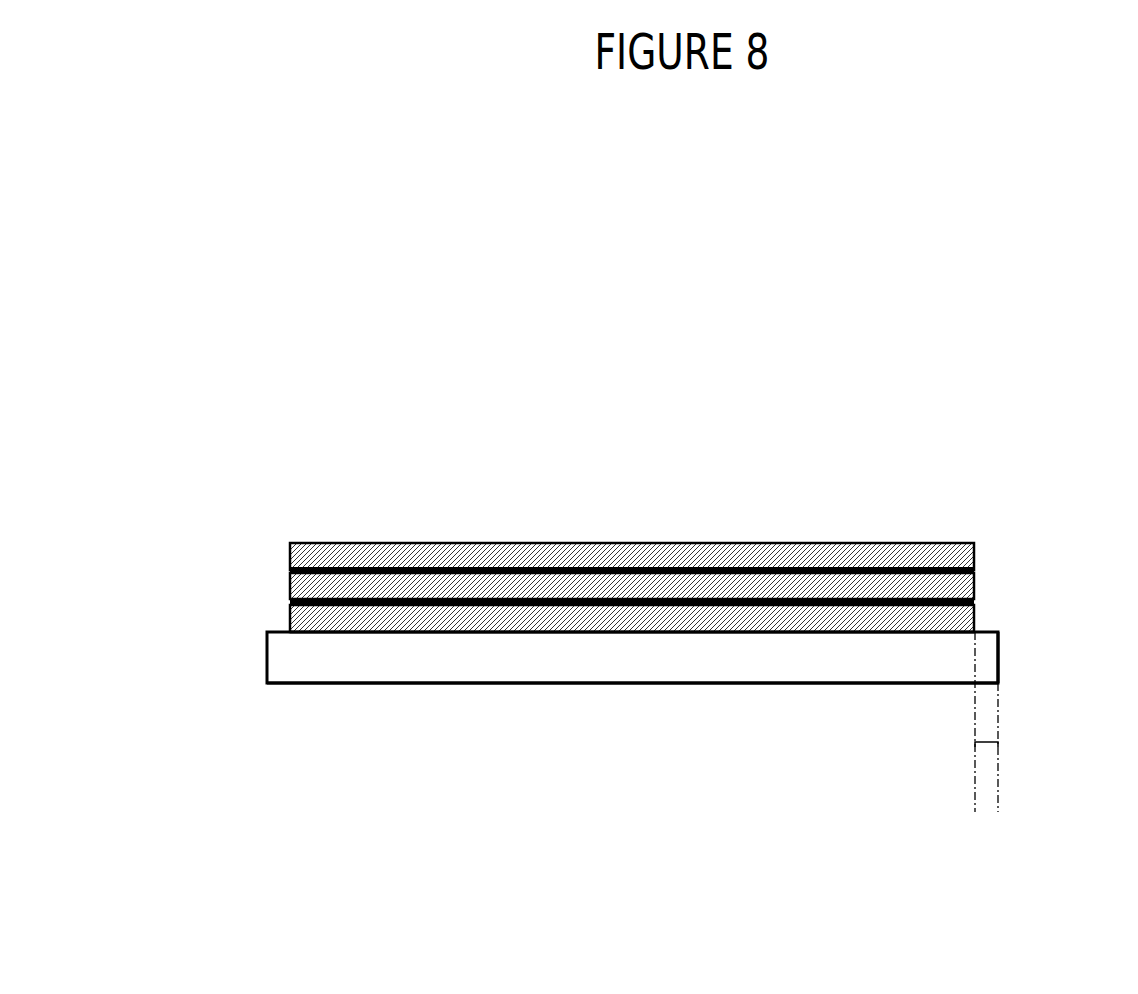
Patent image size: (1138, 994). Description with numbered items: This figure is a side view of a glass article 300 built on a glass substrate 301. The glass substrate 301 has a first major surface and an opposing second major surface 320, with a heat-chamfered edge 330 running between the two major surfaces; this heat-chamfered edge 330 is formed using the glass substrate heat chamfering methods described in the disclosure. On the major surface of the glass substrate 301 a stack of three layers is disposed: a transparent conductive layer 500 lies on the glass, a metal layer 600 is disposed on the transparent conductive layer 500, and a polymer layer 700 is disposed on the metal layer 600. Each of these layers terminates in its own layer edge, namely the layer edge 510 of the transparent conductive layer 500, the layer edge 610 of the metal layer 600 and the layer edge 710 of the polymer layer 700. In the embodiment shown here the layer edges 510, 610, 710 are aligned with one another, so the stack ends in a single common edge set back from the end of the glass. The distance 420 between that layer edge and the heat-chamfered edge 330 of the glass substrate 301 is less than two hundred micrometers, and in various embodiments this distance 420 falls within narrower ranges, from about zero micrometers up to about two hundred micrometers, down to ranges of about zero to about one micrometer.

The glass article 300 is at (655, 480).
The glass substrate 301 is at (658, 676).
The second major surface 320 is at (713, 686).
The heat-chamfered edge 330 is at (998, 664).
The distance 420 is at (987, 747).
The transparent conductive layer 500 is at (290, 617).
The layer edge 510 is at (974, 618).
The metal layer 600 is at (290, 583).
The layer edge 610 is at (974, 588).
The polymer layer 700 is at (290, 552).
The layer edge 710 is at (974, 560).